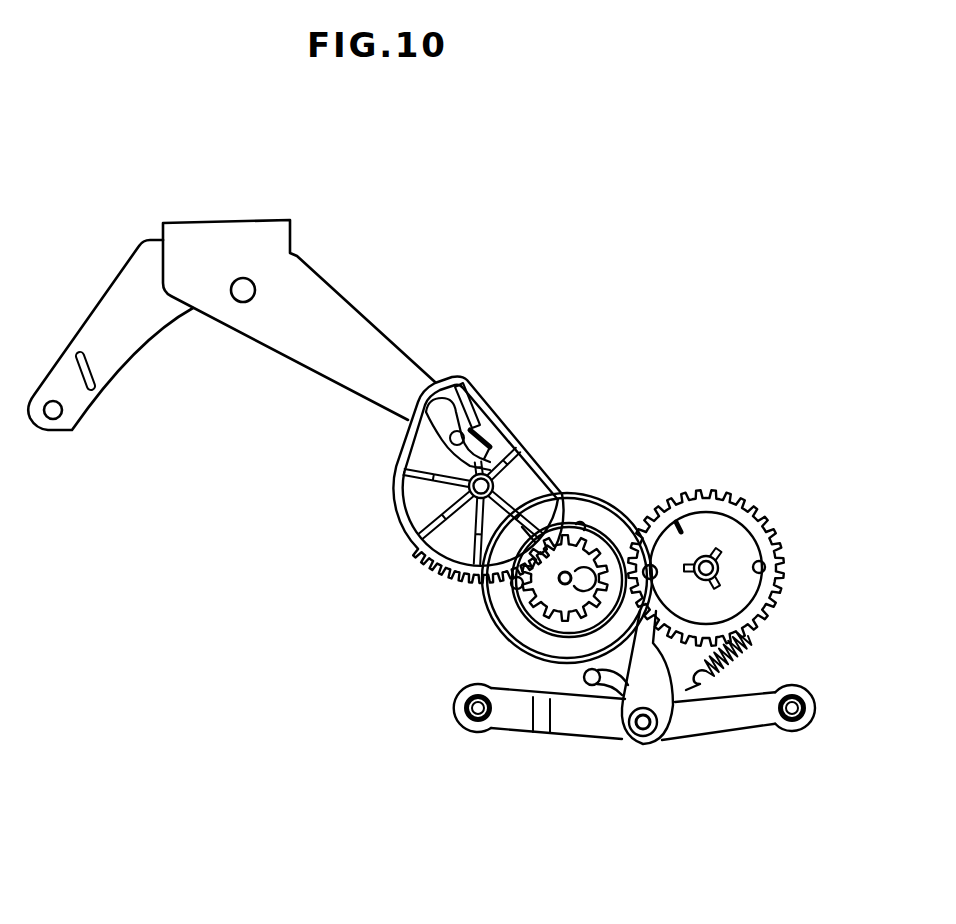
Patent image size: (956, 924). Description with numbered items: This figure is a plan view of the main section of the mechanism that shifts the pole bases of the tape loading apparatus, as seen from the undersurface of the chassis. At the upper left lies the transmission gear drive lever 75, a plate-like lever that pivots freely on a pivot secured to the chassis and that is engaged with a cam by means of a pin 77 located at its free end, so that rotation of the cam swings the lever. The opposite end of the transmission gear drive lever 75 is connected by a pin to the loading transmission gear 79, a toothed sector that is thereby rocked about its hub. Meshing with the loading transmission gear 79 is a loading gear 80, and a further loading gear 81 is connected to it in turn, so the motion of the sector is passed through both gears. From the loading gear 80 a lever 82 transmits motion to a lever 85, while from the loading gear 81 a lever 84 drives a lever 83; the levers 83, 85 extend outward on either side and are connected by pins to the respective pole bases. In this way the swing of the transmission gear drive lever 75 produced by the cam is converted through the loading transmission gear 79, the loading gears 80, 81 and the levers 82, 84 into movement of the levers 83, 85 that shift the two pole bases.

The transmission gear drive lever 75 is at (332, 313).
The pin 77 is at (55, 414).
The loading transmission gear 79 is at (525, 478).
The loading gear 80 is at (607, 520).
The loading gear 81 is at (723, 523).
The lever 82 is at (648, 672).
The lever 83 is at (752, 712).
The lever 84 is at (680, 670).
The lever 85 is at (565, 715).